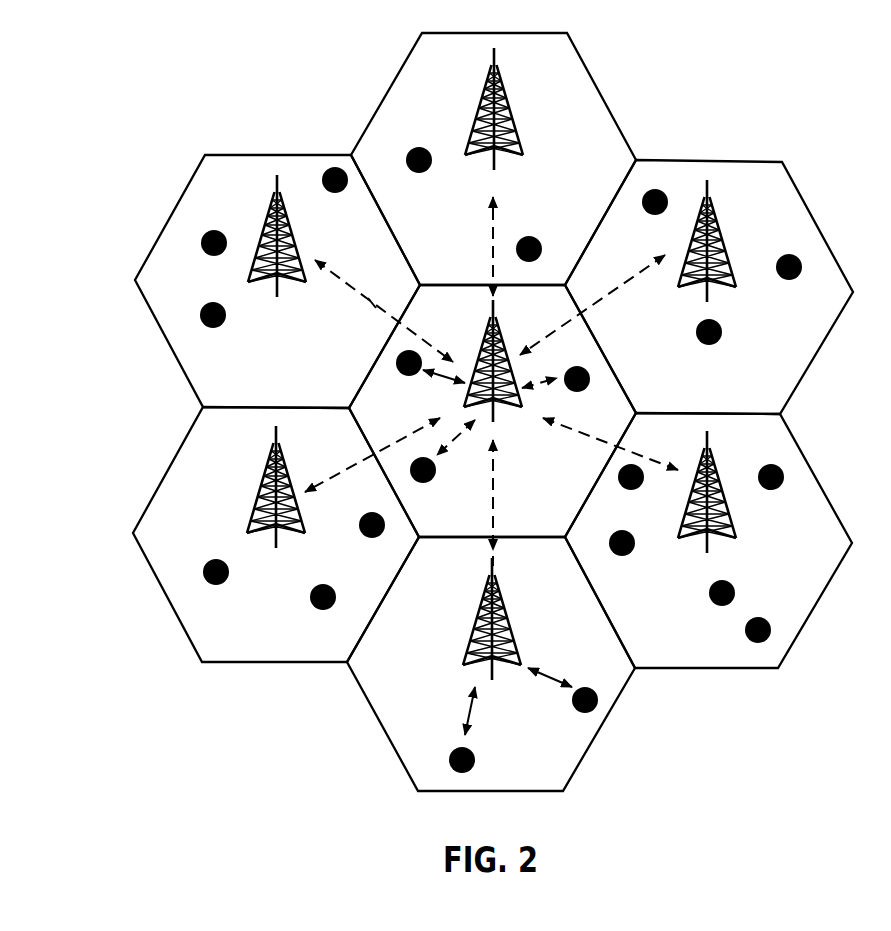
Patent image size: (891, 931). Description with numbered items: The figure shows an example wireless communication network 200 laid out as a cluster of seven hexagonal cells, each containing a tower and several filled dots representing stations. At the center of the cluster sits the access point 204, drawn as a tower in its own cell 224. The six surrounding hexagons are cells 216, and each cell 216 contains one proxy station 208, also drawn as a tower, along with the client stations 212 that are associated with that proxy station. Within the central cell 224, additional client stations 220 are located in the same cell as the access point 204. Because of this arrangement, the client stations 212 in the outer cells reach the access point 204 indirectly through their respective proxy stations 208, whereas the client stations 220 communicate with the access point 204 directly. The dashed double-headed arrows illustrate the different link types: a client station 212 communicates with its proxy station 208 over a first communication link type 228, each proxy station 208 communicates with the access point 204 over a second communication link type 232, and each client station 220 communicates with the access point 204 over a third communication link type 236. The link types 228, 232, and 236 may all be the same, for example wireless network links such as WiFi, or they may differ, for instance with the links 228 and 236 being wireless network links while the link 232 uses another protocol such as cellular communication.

The wireless communication network 200 is at (95, 132).
The access point 204 is at (484, 342).
The proxy station 208 is at (483, 107).
The client station 212 is at (226, 316).
The cell 216 is at (227, 155).
The client station 220 is at (429, 479).
The cell 224 is at (621, 385).
The first communication link type 228 is at (466, 720).
The second communication link type 232 is at (370, 303).
The third communication link type 236 is at (443, 378).